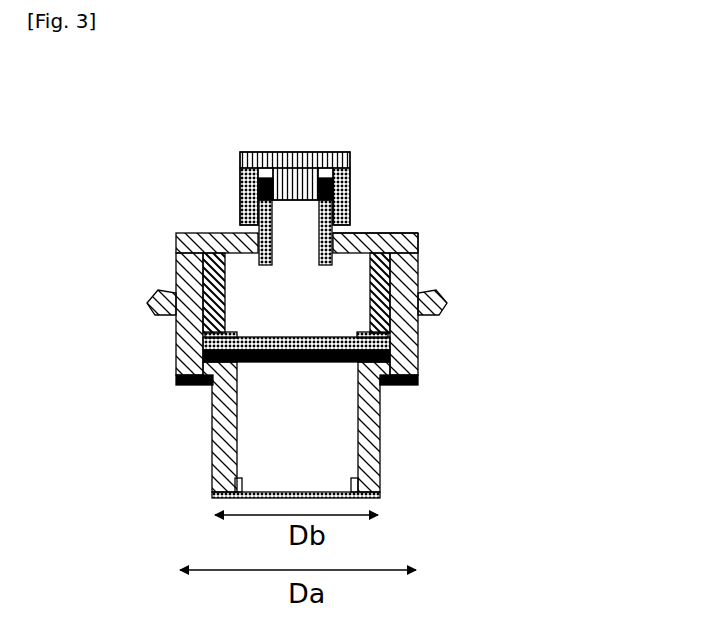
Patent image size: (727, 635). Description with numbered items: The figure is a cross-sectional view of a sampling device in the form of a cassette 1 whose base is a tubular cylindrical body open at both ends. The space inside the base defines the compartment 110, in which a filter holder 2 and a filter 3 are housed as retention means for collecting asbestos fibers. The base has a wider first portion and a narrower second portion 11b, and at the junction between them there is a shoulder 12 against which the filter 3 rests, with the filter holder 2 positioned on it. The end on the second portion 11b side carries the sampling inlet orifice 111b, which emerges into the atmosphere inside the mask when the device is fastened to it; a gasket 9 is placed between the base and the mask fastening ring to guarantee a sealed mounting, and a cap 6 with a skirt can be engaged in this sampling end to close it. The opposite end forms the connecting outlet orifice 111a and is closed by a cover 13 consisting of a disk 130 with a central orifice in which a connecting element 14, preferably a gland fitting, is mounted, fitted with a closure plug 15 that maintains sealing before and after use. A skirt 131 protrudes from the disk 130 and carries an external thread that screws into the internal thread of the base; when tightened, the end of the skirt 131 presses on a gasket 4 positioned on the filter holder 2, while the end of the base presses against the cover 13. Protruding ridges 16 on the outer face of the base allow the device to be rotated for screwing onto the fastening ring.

The cassette 1 is at (160, 481).
The filter holder 2 is at (203, 349).
The filter 3 is at (265, 360).
The gasket 4 is at (176, 332).
The cap 6 is at (383, 497).
The gasket 9 is at (228, 370).
The second portion 11b is at (380, 422).
The shoulder 12 is at (315, 381).
The cover 13 is at (386, 236).
The connecting element 14 is at (250, 192).
The closure plug 15 is at (297, 152).
The protruding ridges 16 is at (445, 292).
The compartment 110 is at (390, 363).
The connecting outlet orifice 111a is at (295, 247).
The sampling inlet orifice 111b is at (327, 478).
The disk 130 is at (358, 235).
The skirt 131 is at (418, 250).